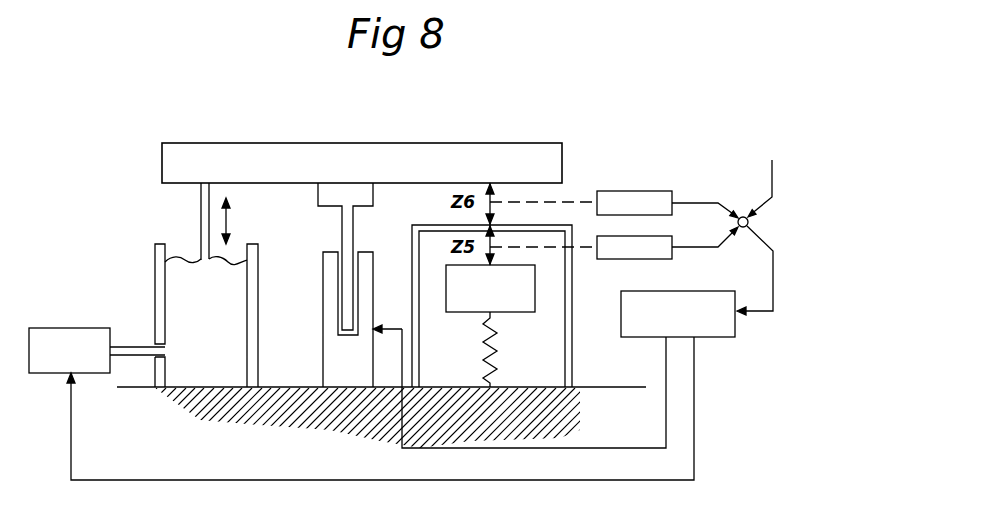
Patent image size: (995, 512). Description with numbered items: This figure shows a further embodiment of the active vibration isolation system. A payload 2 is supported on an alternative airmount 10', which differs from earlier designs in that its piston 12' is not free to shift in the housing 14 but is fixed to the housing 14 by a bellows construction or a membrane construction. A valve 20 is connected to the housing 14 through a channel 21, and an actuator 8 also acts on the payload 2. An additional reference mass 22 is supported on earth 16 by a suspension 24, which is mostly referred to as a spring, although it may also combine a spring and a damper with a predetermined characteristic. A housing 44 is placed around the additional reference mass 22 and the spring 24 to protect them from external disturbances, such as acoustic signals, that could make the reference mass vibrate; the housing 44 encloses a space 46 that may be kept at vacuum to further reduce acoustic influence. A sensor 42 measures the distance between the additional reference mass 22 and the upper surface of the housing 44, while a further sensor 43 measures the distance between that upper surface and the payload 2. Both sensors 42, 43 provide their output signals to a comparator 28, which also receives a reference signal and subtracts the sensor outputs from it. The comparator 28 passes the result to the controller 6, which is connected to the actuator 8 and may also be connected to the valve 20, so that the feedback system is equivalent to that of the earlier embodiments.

The payload 2 is at (303, 157).
The alternative airmount 10' is at (267, 219).
The piston 12' is at (210, 246).
The housing 14 is at (228, 338).
The channel 21 is at (131, 350).
The valve 20 is at (37, 373).
The actuator 8 is at (328, 240).
The housing 44 is at (572, 303).
The space 46 is at (542, 348).
The additional reference mass 22 is at (516, 296).
The suspension 24 is at (490, 347).
The earth 16 is at (586, 393).
The further sensor 43 is at (641, 193).
The sensor 42 is at (646, 257).
The comparator 28 is at (738, 217).
The controller 6 is at (718, 300).